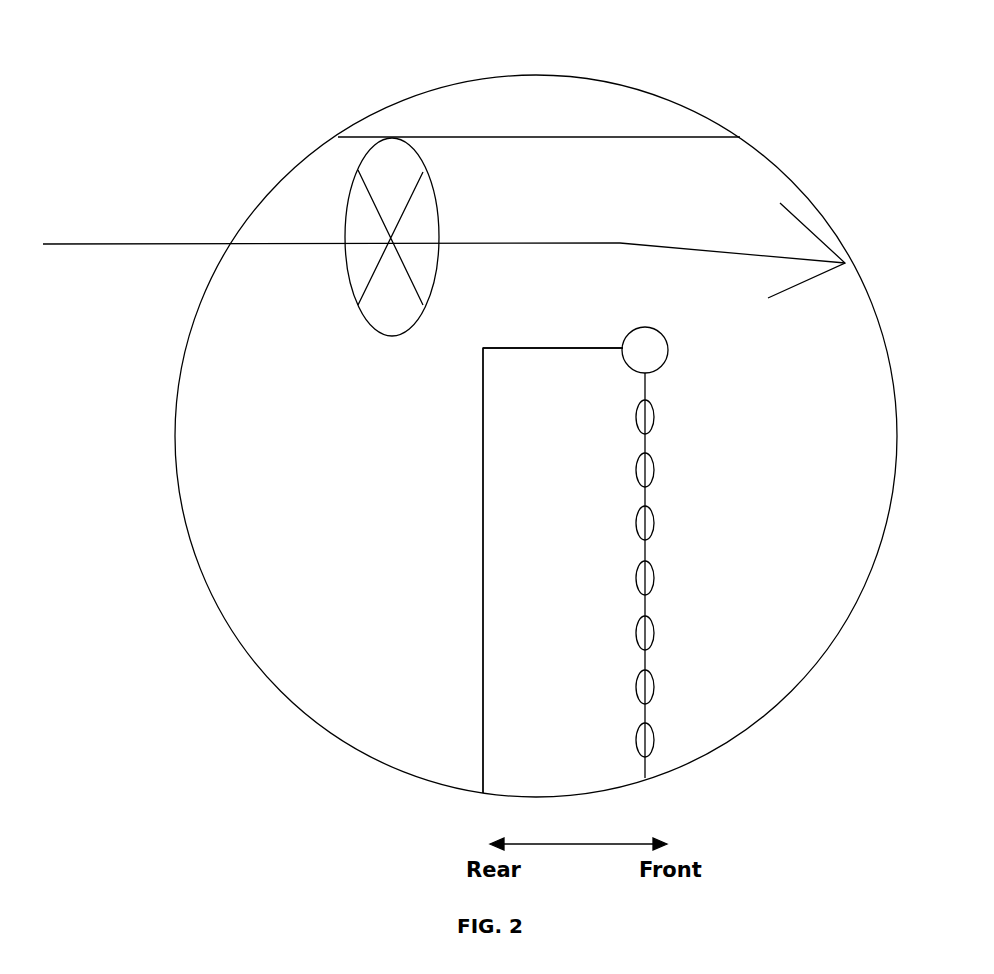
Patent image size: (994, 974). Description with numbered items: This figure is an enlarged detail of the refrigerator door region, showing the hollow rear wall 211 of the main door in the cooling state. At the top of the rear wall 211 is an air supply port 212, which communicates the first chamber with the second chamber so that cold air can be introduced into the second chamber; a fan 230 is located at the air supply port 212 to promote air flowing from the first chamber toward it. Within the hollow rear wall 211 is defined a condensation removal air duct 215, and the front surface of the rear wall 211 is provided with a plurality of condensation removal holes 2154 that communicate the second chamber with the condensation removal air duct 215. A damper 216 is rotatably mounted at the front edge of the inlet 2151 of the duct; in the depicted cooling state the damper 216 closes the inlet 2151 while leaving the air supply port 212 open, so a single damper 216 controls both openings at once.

The air supply port 212 is at (615, 175).
The fan 230 is at (360, 213).
The condensation removal air duct 215 is at (587, 517).
The rear wall 211 is at (482, 608).
The inlet 2151 is at (537, 342).
The damper 216 is at (585, 348).
The condensation removal holes 2154 is at (655, 417).